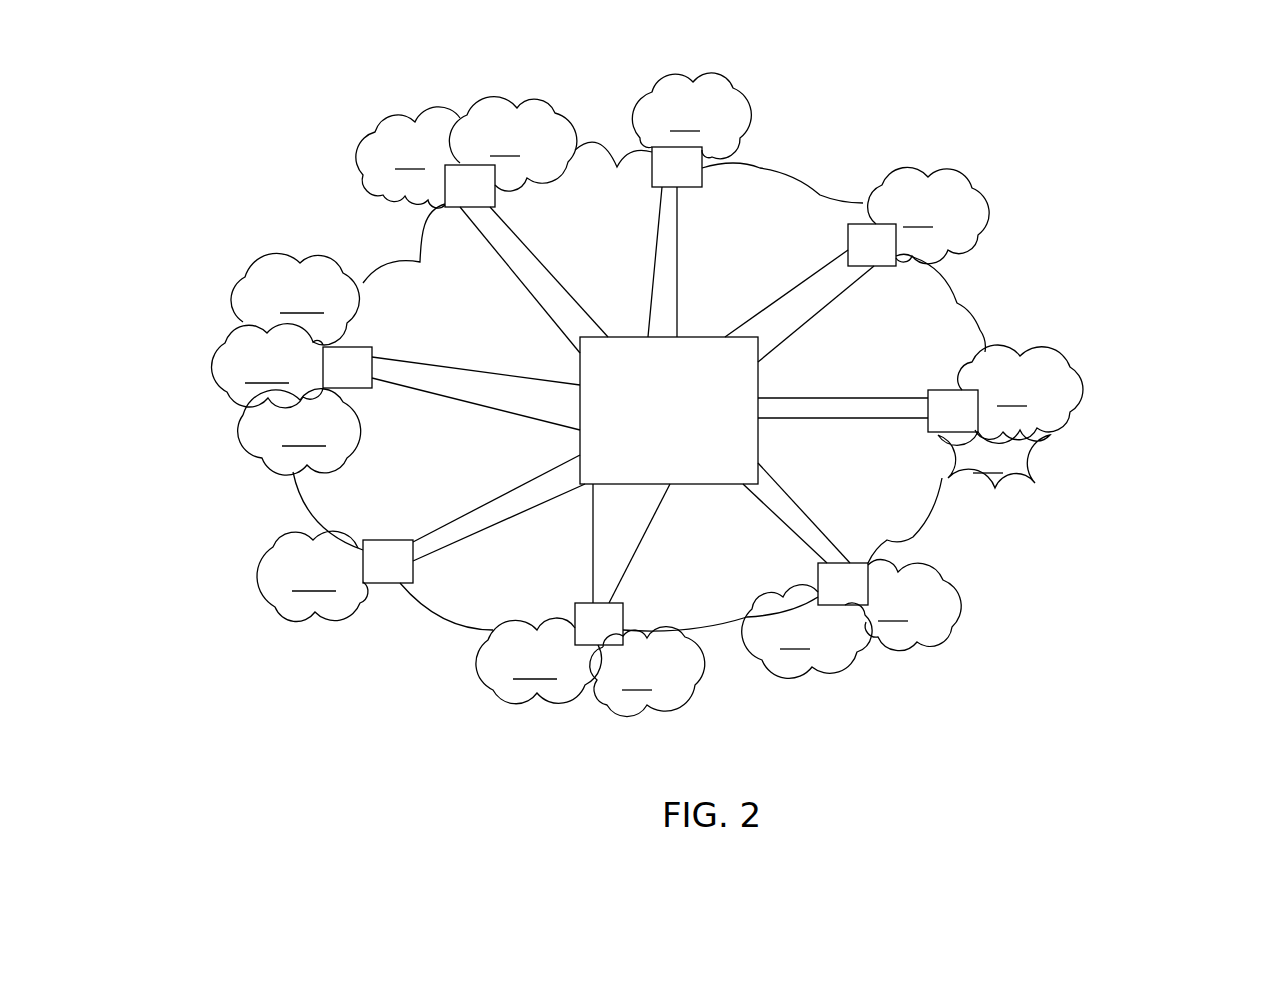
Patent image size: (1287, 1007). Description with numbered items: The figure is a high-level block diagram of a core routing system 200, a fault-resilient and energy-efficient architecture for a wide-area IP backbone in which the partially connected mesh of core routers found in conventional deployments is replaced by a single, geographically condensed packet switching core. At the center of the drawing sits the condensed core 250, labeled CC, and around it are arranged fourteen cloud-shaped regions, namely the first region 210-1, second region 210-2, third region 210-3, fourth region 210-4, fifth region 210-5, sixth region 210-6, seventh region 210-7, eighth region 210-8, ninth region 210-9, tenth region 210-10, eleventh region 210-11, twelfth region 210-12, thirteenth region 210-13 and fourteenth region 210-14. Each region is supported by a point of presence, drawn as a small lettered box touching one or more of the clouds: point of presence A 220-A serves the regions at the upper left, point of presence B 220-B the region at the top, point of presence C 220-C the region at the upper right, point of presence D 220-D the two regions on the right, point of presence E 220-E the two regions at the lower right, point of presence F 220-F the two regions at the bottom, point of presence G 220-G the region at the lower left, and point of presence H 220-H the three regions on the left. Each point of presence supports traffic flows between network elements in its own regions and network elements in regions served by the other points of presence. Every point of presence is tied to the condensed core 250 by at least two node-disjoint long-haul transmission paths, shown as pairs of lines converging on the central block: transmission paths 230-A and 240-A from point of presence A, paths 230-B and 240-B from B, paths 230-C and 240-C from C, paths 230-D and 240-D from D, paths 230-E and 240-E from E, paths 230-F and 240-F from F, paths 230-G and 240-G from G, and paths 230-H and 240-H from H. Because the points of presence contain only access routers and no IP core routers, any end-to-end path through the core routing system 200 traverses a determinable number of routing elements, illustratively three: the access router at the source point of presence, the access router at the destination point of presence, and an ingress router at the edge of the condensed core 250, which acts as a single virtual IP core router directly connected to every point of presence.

The core routing system 200 is at (1172, 92).
The condensed core 250 is at (684, 461).
The region R1 210-1 is at (380, 126).
The region R2 210-2 is at (540, 97).
The region R3 210-3 is at (760, 90).
The region R4 210-4 is at (985, 188).
The region R5 210-5 is at (1080, 372).
The region R6 210-6 is at (1035, 500).
The region R7 210-7 is at (963, 608).
The region R8 210-8 is at (838, 680).
The region R9 210-9 is at (687, 707).
The region R10 210-10 is at (478, 683).
The region R11 210-11 is at (277, 615).
The region R12 210-12 is at (245, 462).
The region R13 210-13 is at (210, 354).
The region R14 210-14 is at (278, 256).
The point of presence A 220-A is at (495, 198).
The point of presence B 220-B is at (702, 178).
The point of presence C 220-C is at (876, 268).
The point of presence D 220-D is at (935, 434).
The point of presence E 220-E is at (818, 588).
The point of presence F 220-F is at (623, 614).
The point of presence G 220-G is at (413, 572).
The point of presence H 220-H is at (372, 392).
The long-haul transmission path 230-A is at (545, 260).
The long-haul transmission path 230-B is at (678, 240).
The long-haul transmission path 230-C is at (818, 318).
The long-haul transmission path 230-D is at (814, 420).
The long-haul transmission path 230-E is at (780, 524).
The long-haul transmission path 230-F is at (591, 500).
The long-haul transmission path 230-G is at (468, 505).
The long-haul transmission path 230-H is at (500, 372).
The long-haul transmission path 240-A is at (505, 268).
The long-haul transmission path 240-B is at (652, 280).
The long-haul transmission path 240-C is at (766, 308).
The long-haul transmission path 240-D is at (886, 396).
The long-haul transmission path 240-E is at (833, 542).
The long-haul transmission path 240-F is at (655, 515).
The long-haul transmission path 240-G is at (514, 520).
The long-haul transmission path 240-H is at (485, 414).